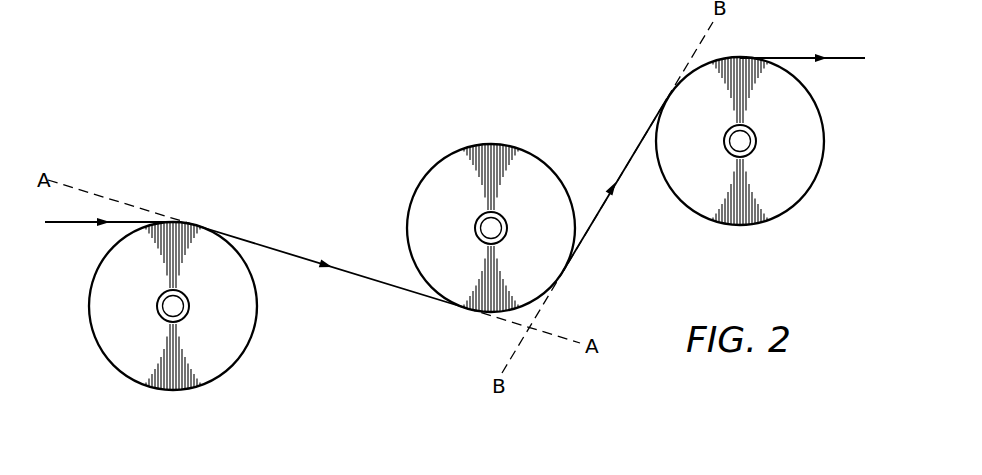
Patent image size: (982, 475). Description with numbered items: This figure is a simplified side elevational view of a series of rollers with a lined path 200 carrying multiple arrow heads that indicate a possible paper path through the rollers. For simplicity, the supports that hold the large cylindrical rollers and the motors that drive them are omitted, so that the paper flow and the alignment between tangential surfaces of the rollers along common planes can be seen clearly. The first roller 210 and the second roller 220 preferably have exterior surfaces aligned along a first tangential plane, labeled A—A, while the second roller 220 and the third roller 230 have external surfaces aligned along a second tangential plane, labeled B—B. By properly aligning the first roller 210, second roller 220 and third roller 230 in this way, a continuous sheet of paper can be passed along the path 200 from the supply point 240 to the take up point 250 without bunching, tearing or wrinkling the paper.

The lined path 200 is at (265, 246).
The first roller 210 is at (119, 375).
The second roller 220 is at (452, 155).
The third roller 230 is at (790, 211).
The supply point 240 is at (72, 224).
The take up point 250 is at (838, 56).